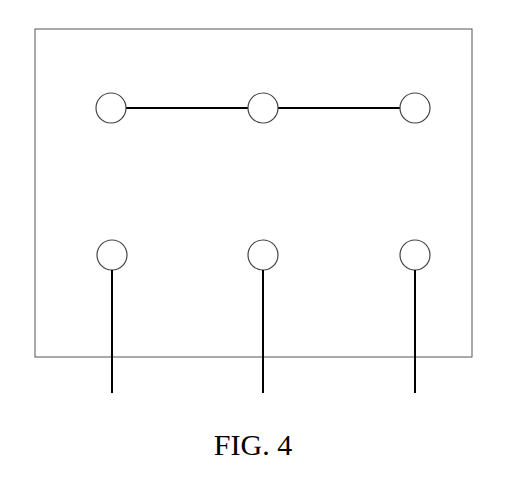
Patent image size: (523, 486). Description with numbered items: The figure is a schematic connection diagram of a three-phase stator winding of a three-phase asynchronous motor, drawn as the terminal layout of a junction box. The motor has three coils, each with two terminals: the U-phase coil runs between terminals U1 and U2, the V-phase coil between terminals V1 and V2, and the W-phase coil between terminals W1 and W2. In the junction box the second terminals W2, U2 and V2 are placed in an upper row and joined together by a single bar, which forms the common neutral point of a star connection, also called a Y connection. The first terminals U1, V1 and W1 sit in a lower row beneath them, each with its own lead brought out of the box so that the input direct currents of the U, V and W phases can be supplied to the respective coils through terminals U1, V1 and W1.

The coil W1-W2 terminal W2 is at (111, 95).
The coil U1-U2 terminal U2 is at (263, 95).
The coil V1-V2 terminal V2 is at (415, 95).
The coil U1-U2 terminal U1 is at (112, 306).
The coil V1-V2 terminal V1 is at (263, 306).
The coil W1-W2 terminal W1 is at (415, 306).